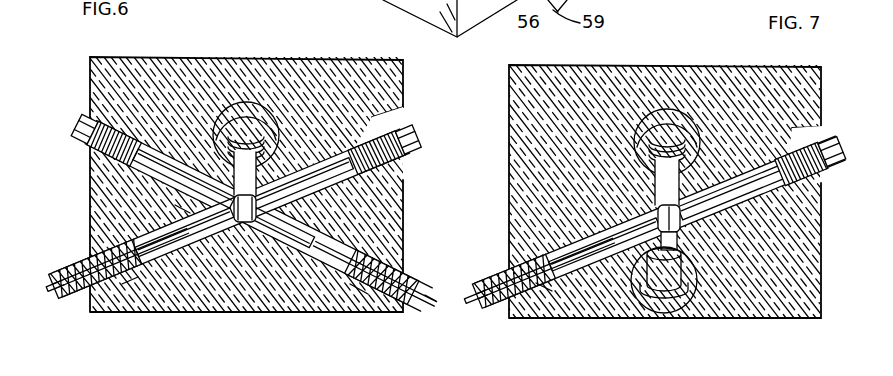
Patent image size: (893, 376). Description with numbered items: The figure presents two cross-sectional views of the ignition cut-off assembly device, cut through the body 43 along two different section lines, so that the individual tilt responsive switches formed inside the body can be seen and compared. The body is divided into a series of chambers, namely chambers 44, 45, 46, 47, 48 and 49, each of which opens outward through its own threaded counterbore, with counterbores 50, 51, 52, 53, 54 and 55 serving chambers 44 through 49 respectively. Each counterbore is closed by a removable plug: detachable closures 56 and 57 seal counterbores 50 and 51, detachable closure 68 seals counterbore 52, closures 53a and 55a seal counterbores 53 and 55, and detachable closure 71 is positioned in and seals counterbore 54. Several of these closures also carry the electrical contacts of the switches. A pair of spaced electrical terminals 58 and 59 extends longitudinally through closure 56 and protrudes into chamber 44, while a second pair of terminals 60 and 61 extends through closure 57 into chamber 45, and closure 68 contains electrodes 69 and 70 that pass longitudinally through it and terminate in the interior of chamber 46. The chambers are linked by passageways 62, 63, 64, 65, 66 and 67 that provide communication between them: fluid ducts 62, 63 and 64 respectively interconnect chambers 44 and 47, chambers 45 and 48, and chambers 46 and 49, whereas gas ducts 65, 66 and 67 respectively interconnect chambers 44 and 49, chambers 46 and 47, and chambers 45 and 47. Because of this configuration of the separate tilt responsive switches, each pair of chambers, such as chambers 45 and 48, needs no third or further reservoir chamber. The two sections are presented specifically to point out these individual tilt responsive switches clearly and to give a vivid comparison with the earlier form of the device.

In FIG. 6, the block 43 is at (296, 60).
In FIG. 7, the block 43 is at (690, 67).
In FIG. 6, the chamber 44 is at (311, 240).
In FIG. 7, the chamber 45 is at (615, 243).
In FIG. 6, the chamber 46 is at (187, 240).
In FIG. 6, the chamber 47 is at (160, 175).
In FIG. 7, the chamber 48 is at (737, 200).
In FIG. 6, the chamber 49 is at (357, 181).
In FIG. 6, the threaded counterbore 50 is at (358, 290).
In FIG. 7, the threaded counterbore 51 is at (543, 290).
In FIG. 6, the threaded counterbore 52 is at (130, 287).
In FIG. 6, the threaded counterbore 53 is at (82, 118).
In FIG. 6, the closure 53a is at (88, 143).
In FIG. 7, the threaded counterbore 54 is at (797, 186).
In FIG. 6, the threaded counterbore 55 is at (397, 172).
In FIG. 6, the closure 55a is at (422, 133).
In FIG. 6, the detachable closure 56 is at (400, 268).
In FIG. 7, the detachable closure 57 is at (497, 277).
In FIG. 6, the electrical terminal 58 is at (418, 300).
In FIG. 6, the electrical terminal 59 is at (430, 293).
In FIG. 7, the electrical terminal 60 is at (472, 310).
In FIG. 7, the electrical terminal 61 is at (467, 300).
In FIG. 6, the fluid duct 62 is at (283, 237).
In FIG. 7, the fluid duct 63 is at (640, 242).
In FIG. 6, the fluid duct 64 is at (230, 212).
In FIG. 6, the gas duct 65 is at (262, 206).
In FIG. 7, the gas duct 66 is at (655, 216).
In FIG. 6, the gas duct 67 is at (180, 210).
In FIG. 6, the detachable closure 68 is at (83, 262).
In FIG. 6, the electrode 69 is at (44, 293).
In FIG. 6, the electrode 70 is at (50, 299).
In FIG. 7, the detachable closure 71 is at (823, 135).